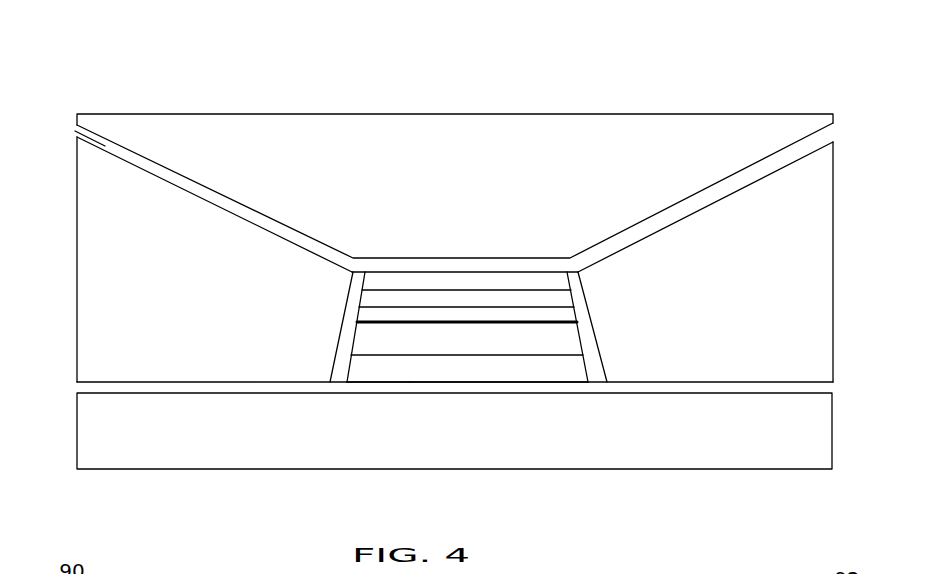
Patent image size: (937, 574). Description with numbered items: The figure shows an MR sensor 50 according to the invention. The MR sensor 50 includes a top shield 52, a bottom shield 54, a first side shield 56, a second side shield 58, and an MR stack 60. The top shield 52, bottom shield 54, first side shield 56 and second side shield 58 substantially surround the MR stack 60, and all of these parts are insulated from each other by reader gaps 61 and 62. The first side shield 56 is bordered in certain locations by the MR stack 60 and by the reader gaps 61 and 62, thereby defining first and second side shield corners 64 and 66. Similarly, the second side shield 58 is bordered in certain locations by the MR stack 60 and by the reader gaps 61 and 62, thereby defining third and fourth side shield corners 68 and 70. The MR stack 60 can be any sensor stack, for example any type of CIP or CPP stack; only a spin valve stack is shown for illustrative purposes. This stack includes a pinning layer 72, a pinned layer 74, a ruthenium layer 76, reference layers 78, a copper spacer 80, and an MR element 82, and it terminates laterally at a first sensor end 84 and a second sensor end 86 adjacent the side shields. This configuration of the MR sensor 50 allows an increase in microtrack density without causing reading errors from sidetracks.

The MR sensor 50 is at (162, 86).
The top shield 52 is at (275, 120).
The bottom shield 54 is at (582, 463).
The first side shield 56 is at (78, 247).
The second side shield 58 is at (833, 253).
The MR stack 60 is at (483, 365).
The reader gap 61 is at (75, 131).
The reader gap 62 is at (815, 391).
The first side shield corner 64 is at (330, 376).
The second side shield corner 66 is at (353, 272).
The third side shield corner 68 is at (573, 272).
The fourth side shield corner 70 is at (605, 380).
The pinning layer 72 is at (367, 370).
The pinned layer 74 is at (410, 342).
The ruthenium layer 76 is at (397, 322).
The reference layers 78 is at (422, 312).
The copper spacer 80 is at (447, 295).
The MR element 82 is at (498, 282).
The first sensor end 84 is at (347, 333).
The second sensor end 86 is at (582, 332).